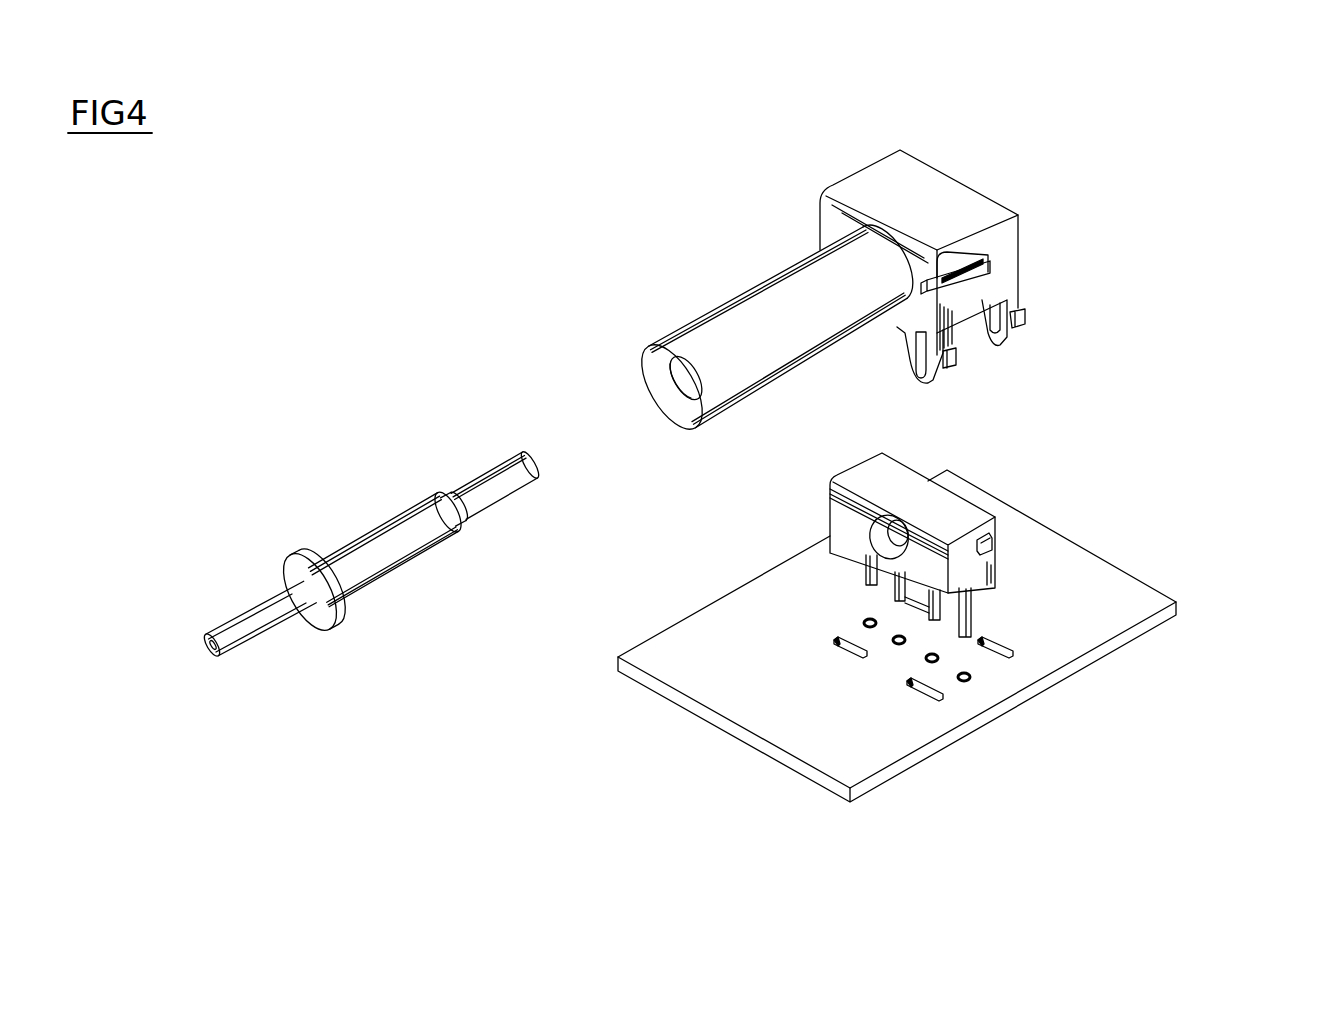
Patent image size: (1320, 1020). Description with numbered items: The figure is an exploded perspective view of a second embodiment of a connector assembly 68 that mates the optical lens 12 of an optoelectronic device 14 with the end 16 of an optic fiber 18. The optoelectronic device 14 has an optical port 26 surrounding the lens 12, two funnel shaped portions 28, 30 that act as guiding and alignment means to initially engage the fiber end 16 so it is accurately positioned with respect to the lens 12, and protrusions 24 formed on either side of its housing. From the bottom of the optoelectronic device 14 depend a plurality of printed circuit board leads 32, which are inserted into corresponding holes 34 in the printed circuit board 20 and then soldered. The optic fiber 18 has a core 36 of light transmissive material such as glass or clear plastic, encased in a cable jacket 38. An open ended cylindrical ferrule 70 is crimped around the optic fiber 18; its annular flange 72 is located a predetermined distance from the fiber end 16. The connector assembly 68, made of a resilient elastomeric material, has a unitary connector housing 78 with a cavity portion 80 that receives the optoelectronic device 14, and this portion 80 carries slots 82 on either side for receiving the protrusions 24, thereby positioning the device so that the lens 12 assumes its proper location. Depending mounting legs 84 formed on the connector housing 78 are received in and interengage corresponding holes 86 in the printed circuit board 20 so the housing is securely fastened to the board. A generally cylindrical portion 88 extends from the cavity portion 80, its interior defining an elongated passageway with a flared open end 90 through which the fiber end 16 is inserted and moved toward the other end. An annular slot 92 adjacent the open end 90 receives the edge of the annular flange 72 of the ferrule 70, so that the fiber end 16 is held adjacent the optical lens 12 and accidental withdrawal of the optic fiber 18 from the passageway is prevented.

The optical lens 12 is at (960, 476).
The optoelectronic device 14 is at (904, 453).
The fiber end 16 is at (541, 466).
The optic fiber 18 is at (277, 632).
The printed circuit board 20 is at (1137, 591).
The protrusions 24 is at (994, 543).
The optical port 26 is at (868, 527).
The funnel shaped portion 28 is at (954, 499).
The funnel shaped portion 30 is at (876, 546).
The printed circuit board leads 32 is at (866, 578).
The holes 34 is at (938, 659).
The core 36 is at (212, 653).
The cable jacket 38 is at (238, 633).
The connector assembly 68 is at (547, 227).
The cylindrical ferrule 70 is at (387, 557).
The annular flange 72 is at (297, 563).
The connector housing 78 is at (847, 179).
The cavity portion 80 is at (931, 182).
The slots 82 is at (986, 260).
The mounting legs 84 is at (1022, 330).
The holes 86 is at (1017, 651).
The cylindrical portion 88 is at (778, 305).
The flared open end 90 is at (634, 377).
The annular slot 92 is at (674, 393).